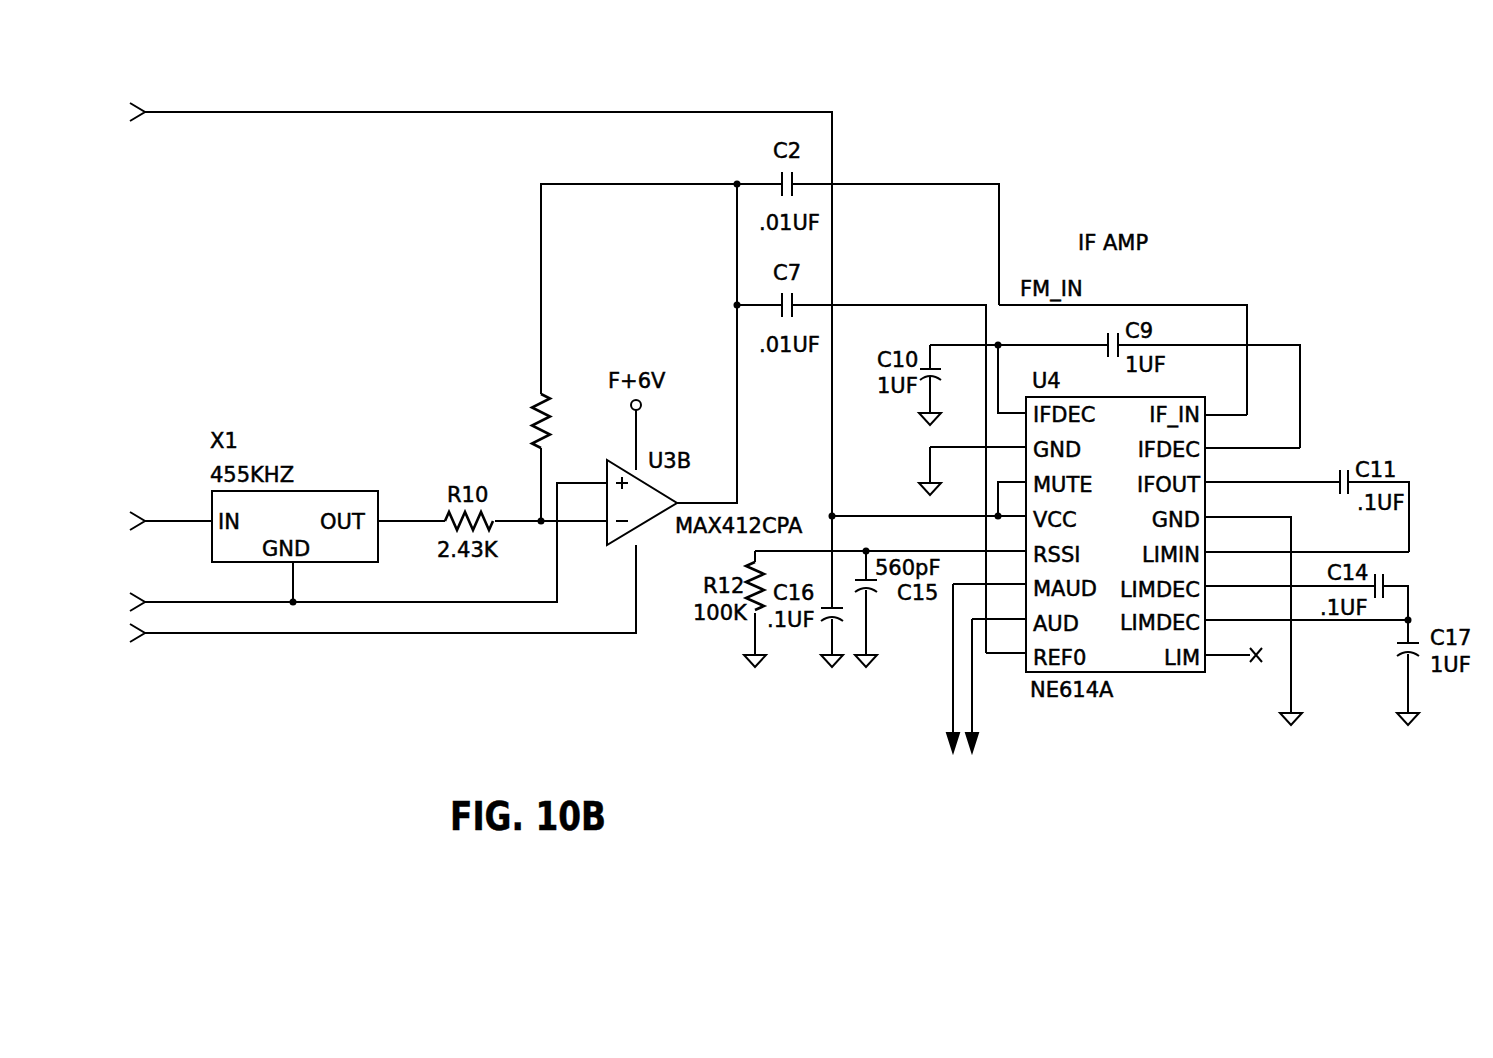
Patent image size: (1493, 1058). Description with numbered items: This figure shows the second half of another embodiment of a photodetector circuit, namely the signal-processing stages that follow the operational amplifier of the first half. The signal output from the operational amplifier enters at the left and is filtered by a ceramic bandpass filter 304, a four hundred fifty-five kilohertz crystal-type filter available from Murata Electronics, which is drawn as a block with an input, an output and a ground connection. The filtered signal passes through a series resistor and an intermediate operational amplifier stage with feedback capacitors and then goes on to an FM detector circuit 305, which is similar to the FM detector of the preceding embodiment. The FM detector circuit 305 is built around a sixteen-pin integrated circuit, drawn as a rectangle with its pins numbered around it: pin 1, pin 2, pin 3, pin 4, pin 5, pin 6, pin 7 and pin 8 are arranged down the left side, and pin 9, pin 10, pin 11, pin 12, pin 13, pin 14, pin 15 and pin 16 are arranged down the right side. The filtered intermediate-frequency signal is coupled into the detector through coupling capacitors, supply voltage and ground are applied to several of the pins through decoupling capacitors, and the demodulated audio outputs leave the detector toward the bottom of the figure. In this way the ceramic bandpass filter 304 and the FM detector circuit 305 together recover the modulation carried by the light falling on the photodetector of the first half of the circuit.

The ceramic bandpass filter 304 is at (348, 491).
The FM detector circuit 305 is at (1178, 672).
The U4 pin 1 IFDEC 1 is at (1012, 379).
The U4 pin 2 GND 2 is at (978, 435).
The U4 pin 3 MUTE 3 is at (1012, 487).
The U4 pin 4 VCC 4 is at (1012, 503).
The U4 pin 5 RSSI 5 is at (946, 538).
The U4 pin 6 MAUD 6 is at (989, 573).
The U4 pin 7 AUD 7 is at (999, 607).
The U4 pin 8 REF0 8 is at (1006, 641).
The U4 pin 9 LIM 9 is at (1233, 646).
The U4 pin 10 LIMDEC 10 is at (1306, 608).
The U4 pin 11 LIMDEC 11 is at (1306, 591).
The U4 pin 12 LIMIN 12 is at (1307, 540).
The U4 pin 13 GND 13 is at (1253, 609).
The U4 pin 14 IFOUT 14 is at (1307, 505).
The U4 pin 15 IFDEC 15 is at (1252, 436).
The U4 pin 16 IF_IN 16 is at (1226, 402).